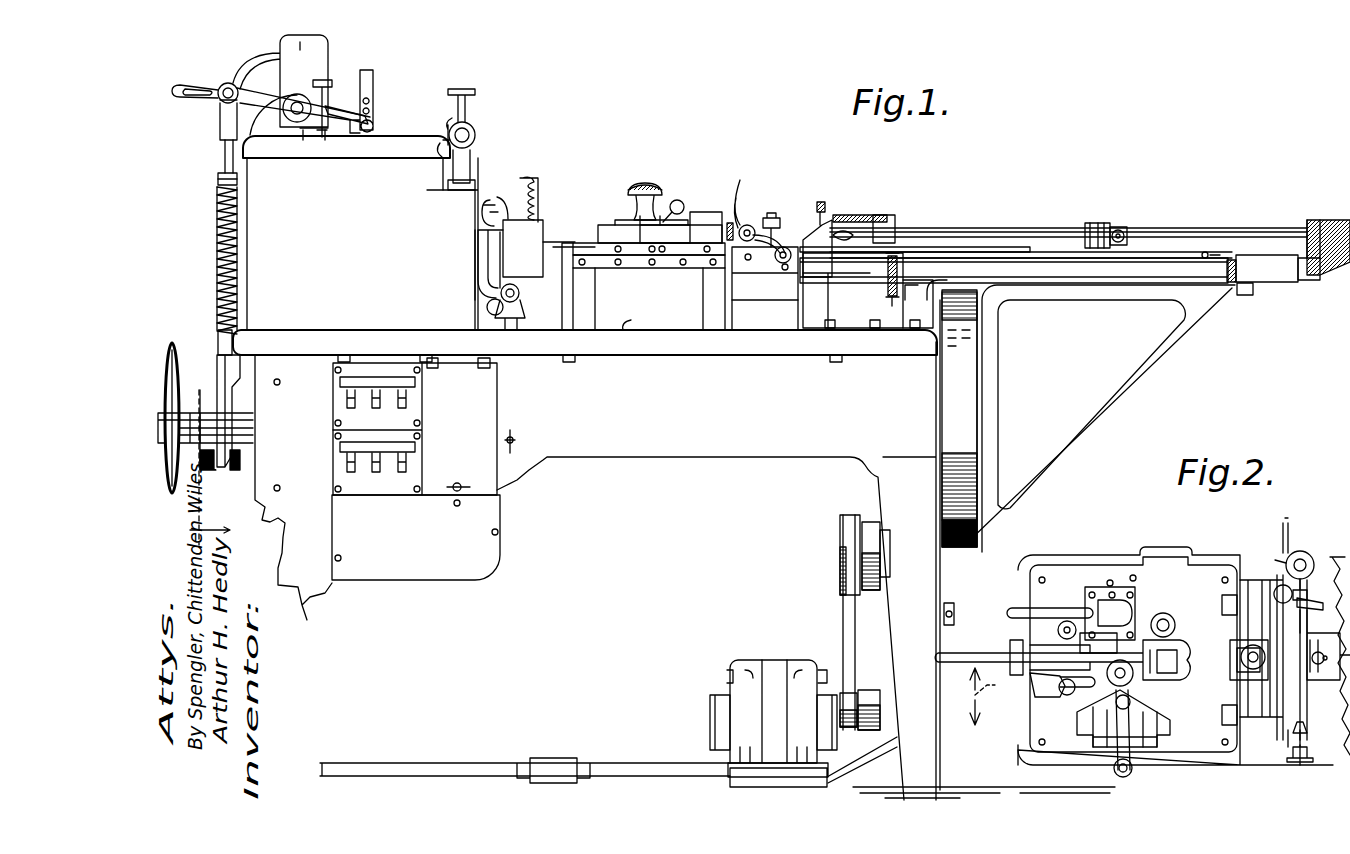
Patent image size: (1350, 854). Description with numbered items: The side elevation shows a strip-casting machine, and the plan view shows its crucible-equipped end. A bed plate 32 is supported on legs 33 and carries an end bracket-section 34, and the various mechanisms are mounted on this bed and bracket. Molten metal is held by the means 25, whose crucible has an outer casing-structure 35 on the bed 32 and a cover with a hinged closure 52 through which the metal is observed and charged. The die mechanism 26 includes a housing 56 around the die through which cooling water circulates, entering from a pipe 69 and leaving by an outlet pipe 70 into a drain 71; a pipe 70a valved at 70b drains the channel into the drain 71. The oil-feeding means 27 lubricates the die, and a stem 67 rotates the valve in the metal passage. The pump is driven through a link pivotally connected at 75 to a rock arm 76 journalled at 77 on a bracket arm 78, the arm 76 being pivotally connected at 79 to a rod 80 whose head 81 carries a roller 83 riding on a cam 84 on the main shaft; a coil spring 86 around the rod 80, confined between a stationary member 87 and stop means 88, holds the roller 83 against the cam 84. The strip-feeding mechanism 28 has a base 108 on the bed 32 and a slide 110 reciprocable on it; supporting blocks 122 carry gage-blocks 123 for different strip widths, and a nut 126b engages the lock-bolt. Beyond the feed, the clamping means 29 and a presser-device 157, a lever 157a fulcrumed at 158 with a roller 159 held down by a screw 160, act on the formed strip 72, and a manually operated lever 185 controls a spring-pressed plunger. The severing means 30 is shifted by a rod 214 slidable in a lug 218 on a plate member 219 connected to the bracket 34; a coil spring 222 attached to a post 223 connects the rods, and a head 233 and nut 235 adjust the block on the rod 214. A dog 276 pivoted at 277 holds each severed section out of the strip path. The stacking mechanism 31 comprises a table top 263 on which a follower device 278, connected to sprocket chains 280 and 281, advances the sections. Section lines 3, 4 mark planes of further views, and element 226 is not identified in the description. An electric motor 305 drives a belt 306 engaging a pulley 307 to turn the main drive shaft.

In FIG. 2, the section line 3 is at (970, 690).
In FIG. 1, the section line 4 is at (210, 475).
In FIG. 1, the means for maintaining a body of molten metal 25 is at (256, 270).
In FIG. 2, the means for maintaining a body of molten metal 25 is at (1054, 566).
In FIG. 1, the die mechanism 26 is at (475, 267).
In FIG. 1, the oil-feeding means 27 is at (483, 123).
In FIG. 1, the strip-feeding mechanism 28 is at (622, 209).
In FIG. 1, the clamping means 29 is at (769, 268).
In FIG. 1, the severing means 30 is at (836, 208).
In FIG. 1, the stacking mechanism 31 is at (987, 238).
In FIG. 1, the bed plate 32 is at (642, 355).
In FIG. 2, the bed plate 32 is at (1233, 765).
In FIG. 1, the legs 33 is at (258, 520).
In FIG. 1, the end bracket-section 34 is at (1140, 380).
In FIG. 1, the outer casing-structure 35 is at (255, 252).
In FIG. 1, the hinged closure 52 is at (328, 140).
In FIG. 2, the hinged closure 52 is at (1160, 740).
In FIG. 1, the housing 56 is at (488, 246).
In FIG. 1, the stem 67 is at (326, 102).
In FIG. 1, the pipe 69 is at (520, 288).
In FIG. 2, the pipe 69 is at (1286, 540).
In FIG. 1, the outlet pipe 70 is at (490, 213).
In FIG. 2, the outlet pipe 70 is at (1282, 600).
In FIG. 1, the pipe 70a is at (487, 307).
In FIG. 2, the pipe 70a is at (1283, 578).
In FIG. 2, the valve 70b is at (1298, 605).
In FIG. 1, the drain 71 is at (525, 300).
In FIG. 2, the drain 71 is at (1305, 552).
In FIG. 1, the strip 72 is at (563, 248).
In FIG. 1, the pivotal connection 75 is at (373, 118).
In FIG. 1, the rock arm 76 is at (258, 75).
In FIG. 1, the journal 77 is at (300, 94).
In FIG. 1, the bracket arm 78 is at (258, 118).
In FIG. 2, the bracket arm 78 is at (1052, 640).
In FIG. 1, the pivotal connection 79 is at (224, 85).
In FIG. 1, the rod 80 is at (227, 158).
In FIG. 1, the head 81 is at (225, 368).
In FIG. 1, the roller 83 is at (213, 472).
In FIG. 1, the cam 84 is at (212, 385).
In FIG. 1, the coil spring 86 is at (218, 222).
In FIG. 1, the stationary member 87 is at (218, 335).
In FIG. 1, the stop means 88 is at (218, 180).
In FIG. 1, the base 108 is at (610, 337).
In FIG. 1, the slide 110 is at (635, 250).
In FIG. 1, the supporting blocks 122 is at (710, 228).
In FIG. 1, the gage-blocks 123 is at (683, 203).
In FIG. 1, the nut 126b is at (645, 183).
In FIG. 1, the presser-device 157 is at (770, 282).
In FIG. 1, the lever 157a is at (780, 240).
In FIG. 1, the fulcrum 158 is at (782, 263).
In FIG. 1, the roller 159 is at (755, 226).
In FIG. 1, the screw 160 is at (775, 214).
In FIG. 1, the manually operated lever 185 is at (742, 191).
In FIG. 1, the rod 214 is at (973, 232).
In FIG. 1, the lug 218 is at (1323, 222).
In FIG. 1, the plate member 219 is at (1313, 282).
In FIG. 1, the coil spring 222 is at (878, 215).
In FIG. 1, the post 223 is at (895, 228).
In FIG. 1, the bar 226 is at (1056, 251).
In FIG. 1, the head 233 is at (1122, 226).
In FIG. 1, the nut 235 is at (1098, 222).
In FIG. 1, the table top 263 is at (1262, 284).
In FIG. 1, the dog 276 is at (868, 290).
In FIG. 1, the pivot 277 is at (852, 232).
In FIG. 1, the follower device 278 is at (1185, 258).
In FIG. 1, the sprocket chain 280 is at (1227, 281).
In FIG. 1, the sprocket chain 281 is at (888, 290).
In FIG. 1, the electric motor 305 is at (770, 660).
In FIG. 1, the belt 306 is at (847, 657).
In FIG. 1, the pulley 307 is at (840, 563).